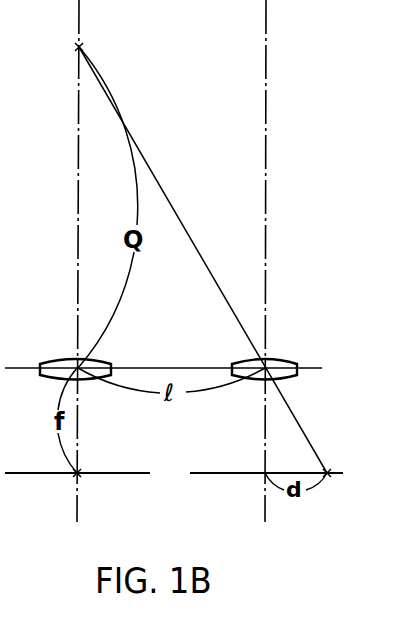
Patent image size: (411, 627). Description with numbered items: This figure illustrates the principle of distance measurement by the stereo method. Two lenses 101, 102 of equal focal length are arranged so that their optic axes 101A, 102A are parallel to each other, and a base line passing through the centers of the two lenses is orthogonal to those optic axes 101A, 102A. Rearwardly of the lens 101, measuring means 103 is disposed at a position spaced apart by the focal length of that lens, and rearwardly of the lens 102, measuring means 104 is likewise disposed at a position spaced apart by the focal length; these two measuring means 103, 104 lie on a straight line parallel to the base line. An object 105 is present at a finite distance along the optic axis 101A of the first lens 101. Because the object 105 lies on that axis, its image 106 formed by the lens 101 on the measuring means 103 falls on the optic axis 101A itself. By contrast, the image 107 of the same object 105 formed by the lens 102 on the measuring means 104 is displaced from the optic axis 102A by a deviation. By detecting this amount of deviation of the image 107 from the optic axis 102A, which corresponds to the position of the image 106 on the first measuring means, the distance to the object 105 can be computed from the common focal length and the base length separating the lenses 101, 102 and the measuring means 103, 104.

The lens 101 is at (59, 357).
The lens 102 is at (282, 358).
The optic axis 101A is at (77, 268).
The optic axis 102A is at (266, 262).
The measuring means 103 is at (24, 475).
The measuring means 104 is at (223, 476).
The object 105 is at (81, 46).
The image 106 is at (80, 476).
The image 107 is at (328, 478).